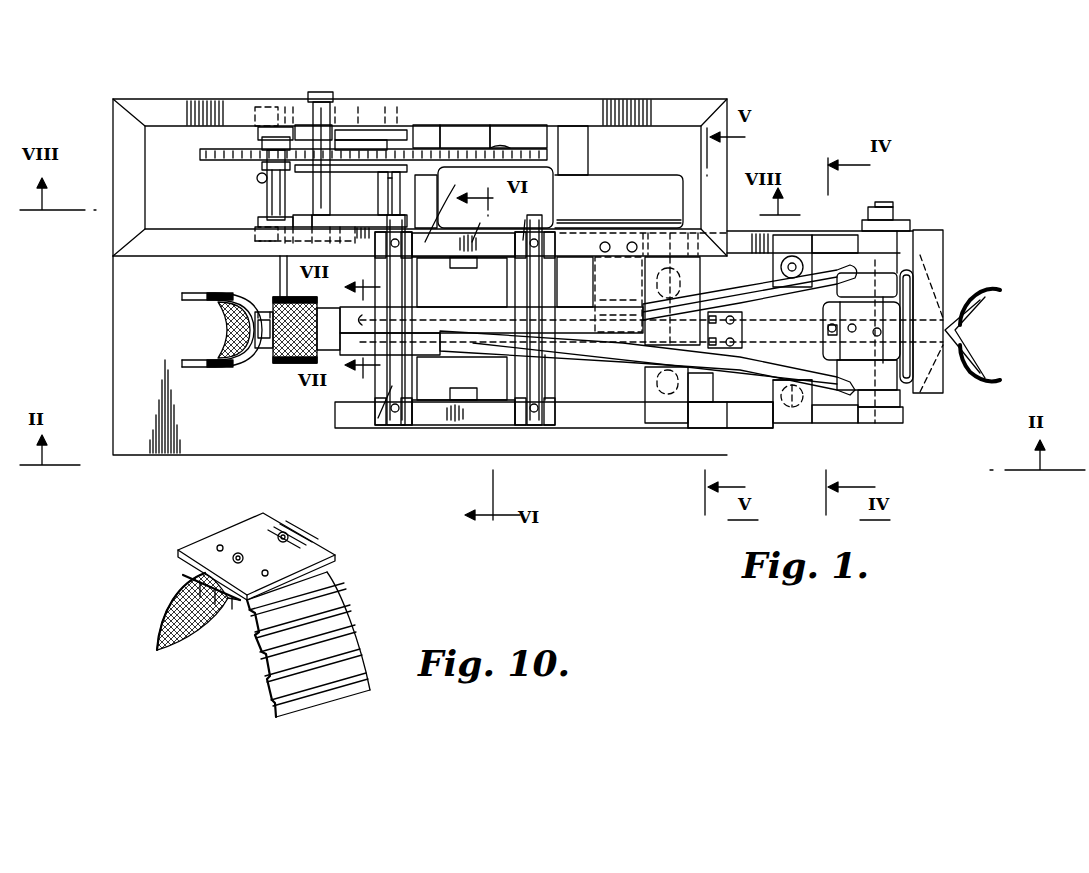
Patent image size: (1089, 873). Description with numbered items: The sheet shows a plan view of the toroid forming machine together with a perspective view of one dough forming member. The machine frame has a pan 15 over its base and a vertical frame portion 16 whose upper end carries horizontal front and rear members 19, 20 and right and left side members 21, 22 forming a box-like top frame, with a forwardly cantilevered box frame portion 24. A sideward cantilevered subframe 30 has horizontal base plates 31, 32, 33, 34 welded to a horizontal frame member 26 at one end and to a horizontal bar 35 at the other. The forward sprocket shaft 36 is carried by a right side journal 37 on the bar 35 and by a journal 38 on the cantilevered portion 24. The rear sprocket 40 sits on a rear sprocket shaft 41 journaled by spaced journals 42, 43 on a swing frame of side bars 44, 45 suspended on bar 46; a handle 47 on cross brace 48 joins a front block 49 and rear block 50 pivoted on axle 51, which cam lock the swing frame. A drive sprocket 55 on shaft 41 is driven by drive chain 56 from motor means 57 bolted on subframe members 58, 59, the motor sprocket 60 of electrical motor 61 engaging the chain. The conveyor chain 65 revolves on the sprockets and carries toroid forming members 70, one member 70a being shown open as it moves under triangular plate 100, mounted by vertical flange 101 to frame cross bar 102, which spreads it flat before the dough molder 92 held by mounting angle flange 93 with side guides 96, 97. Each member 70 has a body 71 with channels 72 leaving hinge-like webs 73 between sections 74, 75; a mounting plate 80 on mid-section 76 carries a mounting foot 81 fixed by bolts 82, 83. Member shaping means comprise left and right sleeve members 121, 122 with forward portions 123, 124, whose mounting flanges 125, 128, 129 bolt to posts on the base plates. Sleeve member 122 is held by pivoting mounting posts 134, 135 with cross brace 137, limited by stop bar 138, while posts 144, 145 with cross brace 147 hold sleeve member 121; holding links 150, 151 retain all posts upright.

In FIG. 1, the pan 15 is at (150, 413).
In FIG. 1, the vertical frame portion 16 is at (113, 122).
In FIG. 1, the horizontal front member 19 is at (727, 115).
In FIG. 1, the horizontal rear member 20 is at (120, 210).
In FIG. 1, the right side member 21 is at (125, 257).
In FIG. 1, the left side member 22 is at (142, 100).
In FIG. 1, the forwardly cantilevered rectangular box frame portion 24 is at (912, 247).
In FIG. 1, the horizontal frame member 26 is at (575, 252).
In FIG. 1, the sideward cantilevered subframe 30 is at (335, 433).
In FIG. 1, the horizontal base plate 31 is at (425, 292).
In FIG. 1, the horizontal base plate 32 is at (575, 282).
In FIG. 1, the horizontal base plate 33 is at (688, 432).
In FIG. 1, the horizontal base plate 34 is at (800, 235).
In FIG. 1, the horizontal bar 35 is at (745, 422).
In FIG. 1, the forward sprocket shaft 36 is at (900, 398).
In FIG. 1, the right side journal 37 is at (903, 425).
In FIG. 1, the journal 38 is at (905, 232).
In FIG. 1, the rear sprocket 40 is at (265, 348).
In FIG. 1, the rear sprocket shaft 41 is at (275, 272).
In FIG. 1, the journal 42 is at (258, 222).
In FIG. 1, the journal 43 is at (258, 130).
In FIG. 1, the swing frame side bar 44 is at (347, 217).
In FIG. 1, the swing frame side bar 45 is at (310, 128).
In FIG. 1, the bar 46 is at (330, 125).
In FIG. 1, the handle 47 is at (260, 178).
In FIG. 1, the cross brace 48 is at (368, 140).
In FIG. 1, the front block 49 is at (388, 292).
In FIG. 1, the rear block 50 is at (340, 115).
In FIG. 1, the axle 51 is at (465, 136).
In FIG. 1, the drive sprocket 55 is at (215, 151).
In FIG. 1, the drive chain 56 is at (480, 150).
In FIG. 1, the motor means 57 is at (555, 173).
In FIG. 1, the subframe member 58 is at (424, 126).
In FIG. 1, the subframe member 59 is at (578, 142).
In FIG. 1, the motor sprocket 60 is at (540, 148).
In FIG. 1, the electrical motor 61 is at (658, 200).
In FIG. 1, the conveyor chain 65 is at (285, 357).
In FIG. 1, the toroid forming member 70 is at (218, 330).
In FIG. 10, the toroid forming member 70 is at (340, 575).
In FIG. 1, the dough forming member 70a is at (990, 298).
In FIG. 10, the body 71 is at (250, 636).
In FIG. 10, the channel 72 is at (320, 672).
In FIG. 10, the web 73 is at (262, 680).
In FIG. 10, the body section 74 is at (335, 605).
In FIG. 10, the body section 75 is at (355, 625).
In FIG. 10, the mid-section 76 is at (205, 638).
In FIG. 10, the mounting plate 80 is at (300, 535).
In FIG. 10, the mounting foot 81 is at (175, 599).
In FIG. 10, the bolt 82 is at (235, 555).
In FIG. 10, the bolt 83 is at (278, 535).
In FIG. 1, the dough molder 92 is at (758, 340).
In FIG. 1, the mounting angle flange 93 is at (716, 348).
In FIG. 1, the side guide 96 is at (872, 300).
In FIG. 1, the side guide 97 is at (868, 392).
In FIG. 1, the triangular plate 100 is at (982, 322).
In FIG. 1, the vertical flange portion 101 is at (912, 367).
In FIG. 1, the frame cross bar 102 is at (930, 270).
In FIG. 1, the left sleeve member 121 is at (475, 315).
In FIG. 1, the right sleeve member 122 is at (478, 355).
In FIG. 1, the forward sleeve portion 123 is at (825, 270).
In FIG. 1, the forward sleeve portion 124 is at (815, 385).
In FIG. 1, the mounting flange 125 is at (788, 258).
In FIG. 1, the mounting flange 128 is at (790, 408).
In FIG. 1, the mounting flange 129 is at (652, 378).
In FIG. 1, the mounting post 134 is at (400, 427).
In FIG. 1, the mounting post 135 is at (535, 427).
In FIG. 1, the cross brace 137 is at (445, 412).
In FIG. 1, the stop bar 138 is at (470, 402).
In FIG. 1, the post 144 is at (458, 205).
In FIG. 1, the post 145 is at (522, 220).
In FIG. 1, the cross brace 147 is at (461, 223).
In FIG. 1, the holding link 150 is at (377, 425).
In FIG. 1, the holding link 151 is at (545, 378).